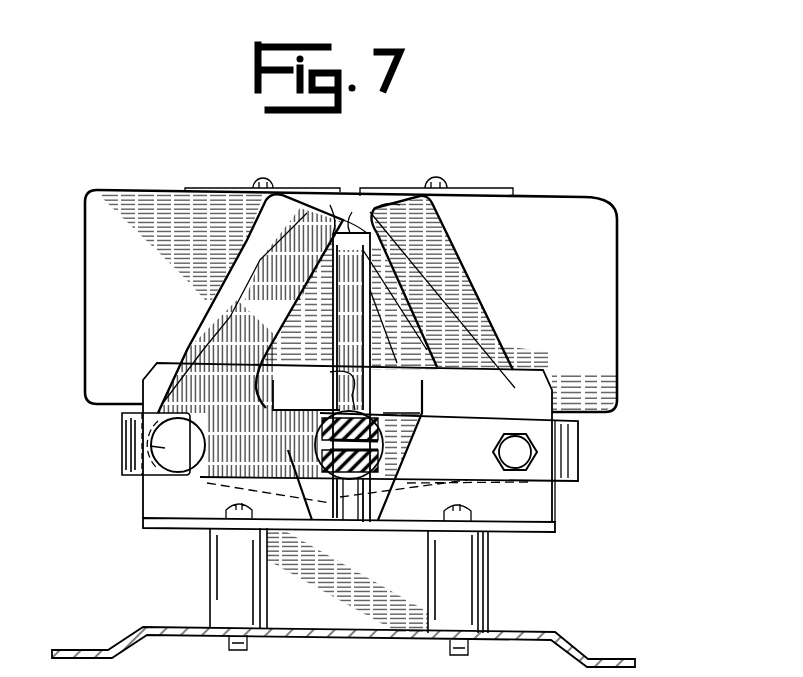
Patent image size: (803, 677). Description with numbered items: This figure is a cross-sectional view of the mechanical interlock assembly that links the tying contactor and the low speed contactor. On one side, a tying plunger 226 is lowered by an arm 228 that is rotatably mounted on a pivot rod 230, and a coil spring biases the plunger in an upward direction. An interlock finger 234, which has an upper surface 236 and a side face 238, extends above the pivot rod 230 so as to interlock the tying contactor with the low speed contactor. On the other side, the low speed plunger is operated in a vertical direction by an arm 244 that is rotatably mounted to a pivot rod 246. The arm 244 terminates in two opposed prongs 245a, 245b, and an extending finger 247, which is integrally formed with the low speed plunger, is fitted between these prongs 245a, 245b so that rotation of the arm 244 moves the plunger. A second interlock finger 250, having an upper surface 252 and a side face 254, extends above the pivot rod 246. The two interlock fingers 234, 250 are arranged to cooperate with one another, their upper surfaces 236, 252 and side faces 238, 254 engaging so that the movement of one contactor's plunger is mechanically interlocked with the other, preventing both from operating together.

The tying plunger 226 is at (347, 236).
The arm 228 is at (408, 409).
The pivot rod 230 is at (568, 467).
The interlock finger 234 is at (467, 268).
The upper surface 236 is at (420, 188).
The side face 238 is at (378, 203).
The arm 244 is at (328, 410).
The prong 245a is at (319, 385).
The prong 245b is at (350, 515).
The pivot rod 246 is at (150, 448).
The extending finger 247 is at (385, 448).
The interlock finger 250 is at (208, 316).
The upper surface 252 is at (270, 195).
The side face 254 is at (324, 214).